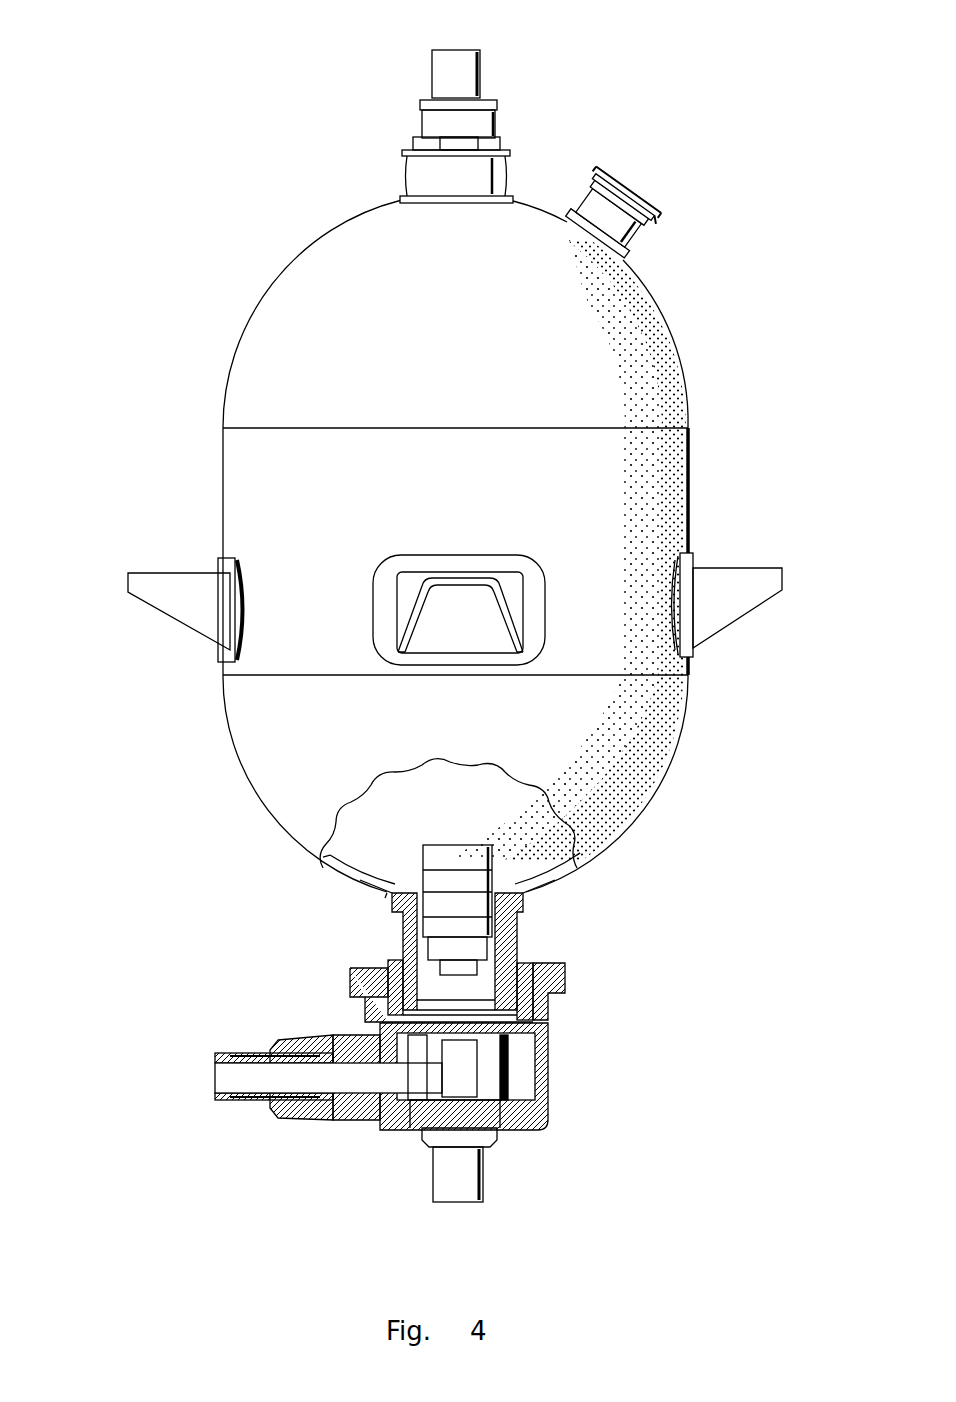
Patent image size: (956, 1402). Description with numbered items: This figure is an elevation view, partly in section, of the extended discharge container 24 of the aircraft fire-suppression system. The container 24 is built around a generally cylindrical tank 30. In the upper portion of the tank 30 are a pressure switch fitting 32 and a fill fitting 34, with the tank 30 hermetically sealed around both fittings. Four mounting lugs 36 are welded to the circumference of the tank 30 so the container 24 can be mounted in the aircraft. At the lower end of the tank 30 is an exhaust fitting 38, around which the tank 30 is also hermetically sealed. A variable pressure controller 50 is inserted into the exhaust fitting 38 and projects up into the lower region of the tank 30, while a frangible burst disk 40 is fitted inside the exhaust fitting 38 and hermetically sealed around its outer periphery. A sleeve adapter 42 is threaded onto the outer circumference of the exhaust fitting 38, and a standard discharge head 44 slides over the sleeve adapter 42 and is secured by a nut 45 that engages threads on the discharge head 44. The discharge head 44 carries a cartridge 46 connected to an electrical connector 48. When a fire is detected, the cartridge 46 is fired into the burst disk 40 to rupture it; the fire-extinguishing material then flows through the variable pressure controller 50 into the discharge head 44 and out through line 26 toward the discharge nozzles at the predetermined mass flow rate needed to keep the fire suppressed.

The extended discharge container 24 is at (244, 327).
The line 26 is at (252, 1053).
The tank 30 is at (692, 462).
The pressure switch fitting 32 is at (405, 175).
The fill fitting 34 is at (640, 229).
The mounting lugs 36 is at (190, 607).
The exhaust fitting 38 is at (515, 930).
The frangible burst disk 40 is at (528, 1020).
The sleeve adapter 42 is at (393, 960).
The discharge head 44 is at (400, 1117).
The nut 45 is at (350, 978).
The cartridge 46 is at (463, 1065).
The electrical connector 48 is at (453, 1170).
The variable pressure controller 50 is at (467, 845).